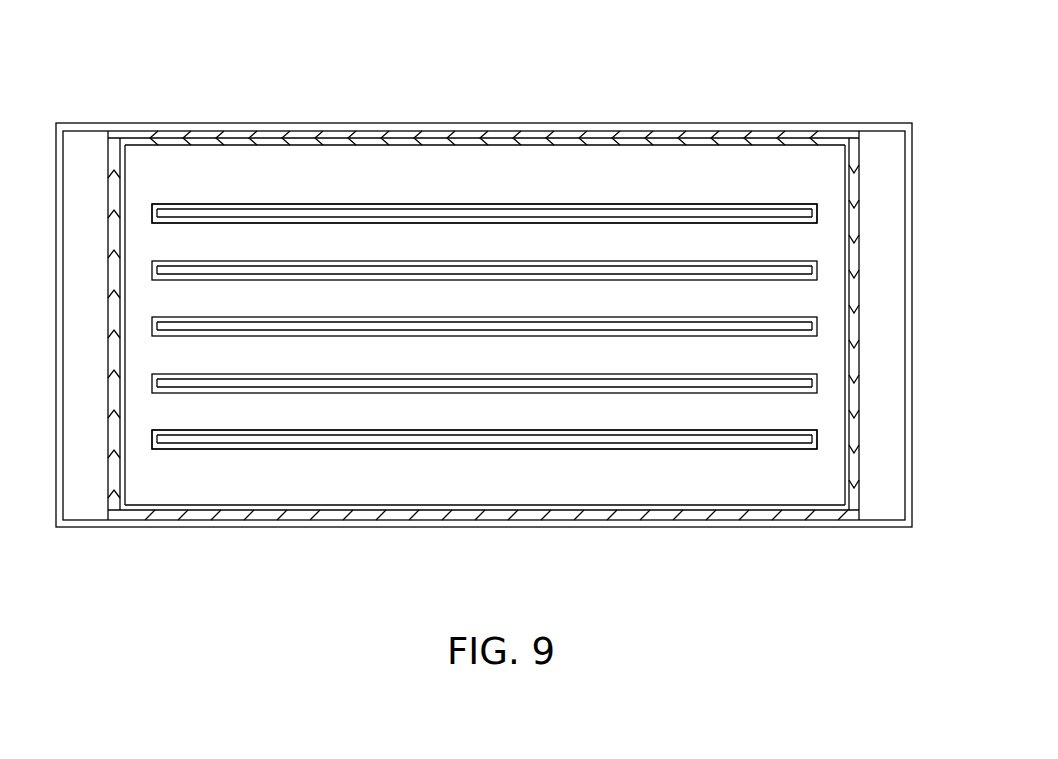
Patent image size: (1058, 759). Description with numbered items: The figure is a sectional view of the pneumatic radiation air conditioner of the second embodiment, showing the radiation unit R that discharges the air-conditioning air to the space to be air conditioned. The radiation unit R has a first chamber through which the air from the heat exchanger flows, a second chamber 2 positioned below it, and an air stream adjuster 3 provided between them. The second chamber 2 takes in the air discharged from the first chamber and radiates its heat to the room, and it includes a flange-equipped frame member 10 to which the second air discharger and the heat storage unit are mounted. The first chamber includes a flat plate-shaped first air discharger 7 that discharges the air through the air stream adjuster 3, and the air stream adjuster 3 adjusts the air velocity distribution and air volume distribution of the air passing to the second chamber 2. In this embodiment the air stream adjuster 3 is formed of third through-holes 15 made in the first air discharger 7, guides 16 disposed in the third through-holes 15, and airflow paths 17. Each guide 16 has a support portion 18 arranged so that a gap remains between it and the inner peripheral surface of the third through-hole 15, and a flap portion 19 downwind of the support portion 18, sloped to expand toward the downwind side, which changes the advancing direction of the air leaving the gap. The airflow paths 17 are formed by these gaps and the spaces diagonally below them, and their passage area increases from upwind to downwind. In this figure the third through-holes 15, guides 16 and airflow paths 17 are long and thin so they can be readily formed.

The second chamber 2 is at (151, 121).
The air stream adjuster 3 is at (490, 329).
The first air discharger 7 is at (343, 183).
The flange-equipped frame member 10 is at (531, 268).
The third through-holes 15 is at (815, 208).
The guides 16 is at (718, 197).
The airflow paths 17 is at (667, 206).
The support portion 18 is at (685, 207).
The flap portion 19 is at (745, 207).
The radiation unit R is at (454, 134).